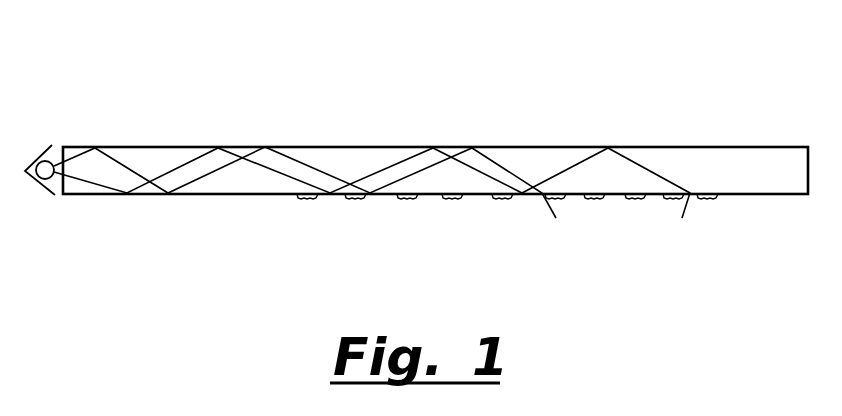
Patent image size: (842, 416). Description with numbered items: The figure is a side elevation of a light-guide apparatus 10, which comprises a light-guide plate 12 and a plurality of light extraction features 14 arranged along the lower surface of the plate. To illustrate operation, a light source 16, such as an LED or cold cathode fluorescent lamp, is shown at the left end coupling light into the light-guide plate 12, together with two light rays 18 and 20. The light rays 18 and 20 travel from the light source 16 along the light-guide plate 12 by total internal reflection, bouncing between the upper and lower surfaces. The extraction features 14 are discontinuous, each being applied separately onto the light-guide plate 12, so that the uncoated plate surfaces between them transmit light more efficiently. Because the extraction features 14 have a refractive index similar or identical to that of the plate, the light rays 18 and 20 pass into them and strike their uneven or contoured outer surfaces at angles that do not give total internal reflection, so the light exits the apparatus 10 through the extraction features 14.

The light-guide apparatus 10 is at (556, 103).
The light-guide plate 12 is at (705, 147).
The light extraction features 14 is at (360, 195).
The light source 16 is at (48, 180).
The light ray 18 is at (192, 182).
The light ray 20 is at (180, 170).